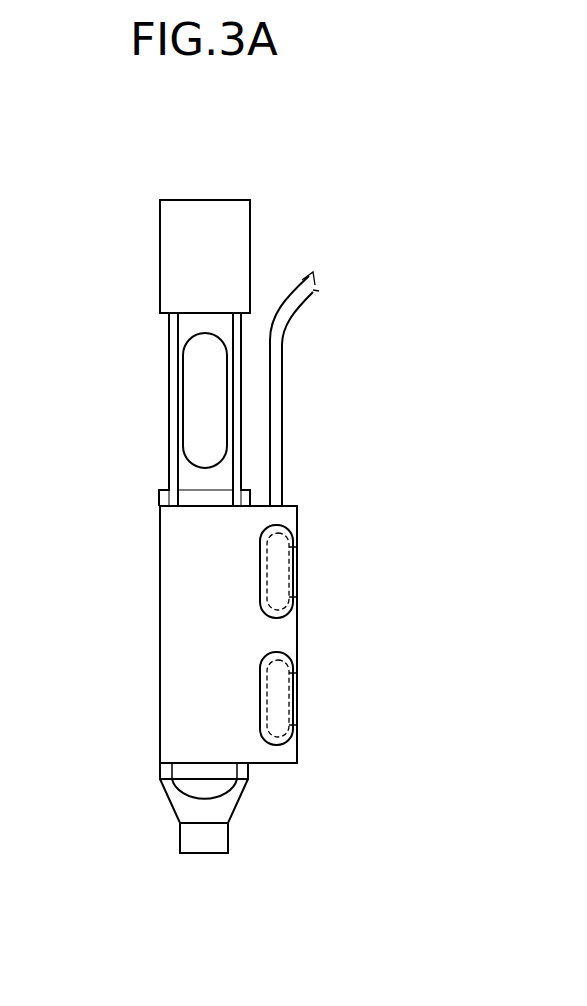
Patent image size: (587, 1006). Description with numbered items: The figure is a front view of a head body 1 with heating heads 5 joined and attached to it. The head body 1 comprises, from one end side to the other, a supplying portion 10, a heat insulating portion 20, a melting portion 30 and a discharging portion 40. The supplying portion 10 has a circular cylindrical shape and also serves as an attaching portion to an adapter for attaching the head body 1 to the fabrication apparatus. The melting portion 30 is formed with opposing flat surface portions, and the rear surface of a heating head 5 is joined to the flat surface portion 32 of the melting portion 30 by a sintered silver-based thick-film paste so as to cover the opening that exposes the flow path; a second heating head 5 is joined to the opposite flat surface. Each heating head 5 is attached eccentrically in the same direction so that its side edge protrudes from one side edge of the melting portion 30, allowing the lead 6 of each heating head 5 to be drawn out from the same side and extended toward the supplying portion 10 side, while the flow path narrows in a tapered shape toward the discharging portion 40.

The head body 1 is at (118, 239).
The supplying portion 10 is at (223, 223).
The heat insulating portion 20 is at (169, 349).
The lead 6 is at (277, 372).
The heating head 5 is at (182, 549).
The melting portion 30 is at (160, 613).
The flat surface portion 32 is at (164, 772).
The discharging portion 40 is at (175, 811).